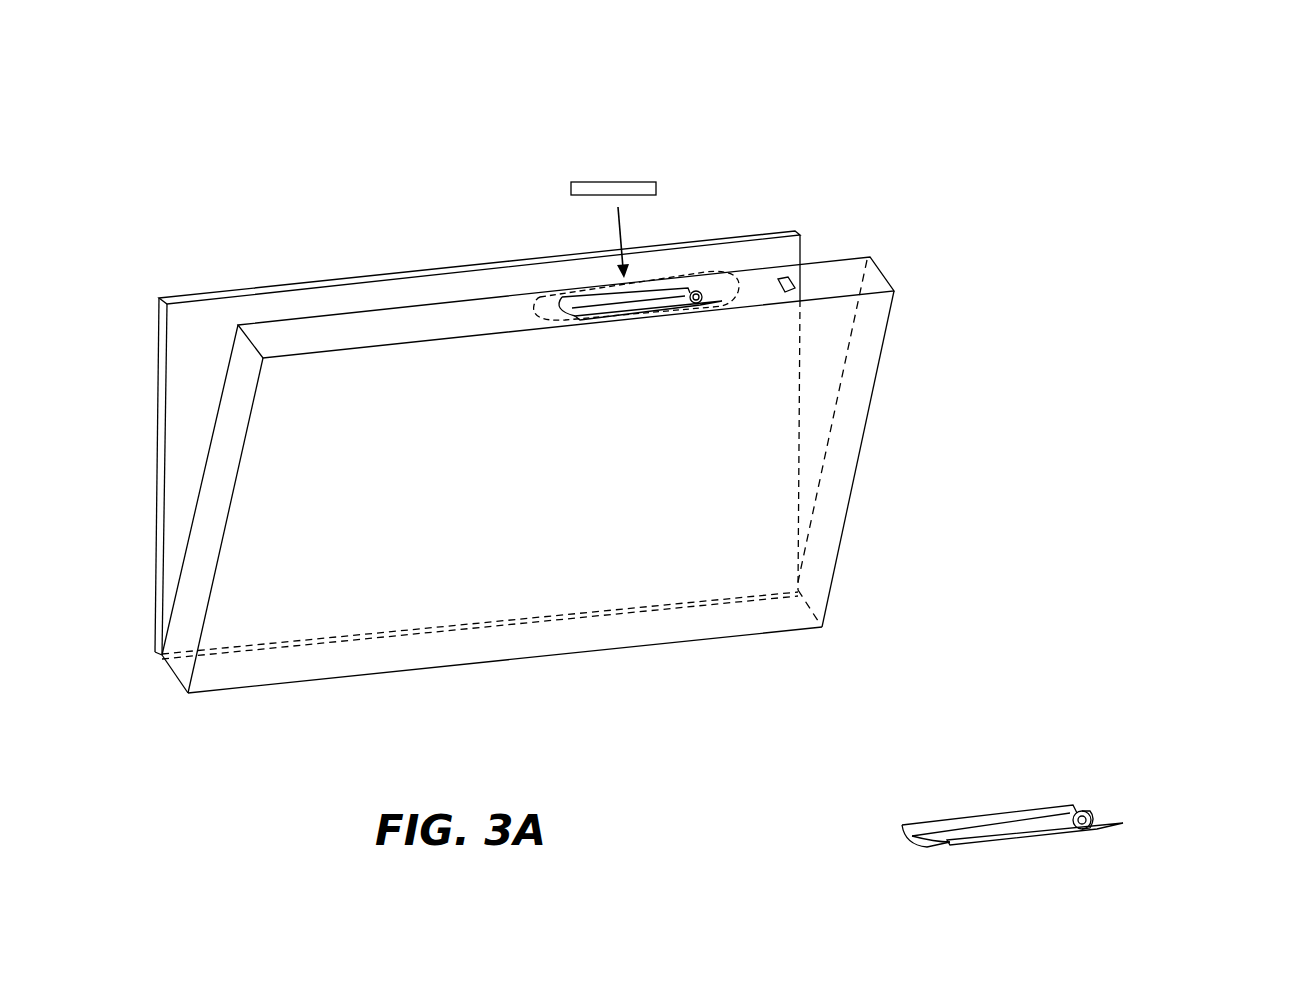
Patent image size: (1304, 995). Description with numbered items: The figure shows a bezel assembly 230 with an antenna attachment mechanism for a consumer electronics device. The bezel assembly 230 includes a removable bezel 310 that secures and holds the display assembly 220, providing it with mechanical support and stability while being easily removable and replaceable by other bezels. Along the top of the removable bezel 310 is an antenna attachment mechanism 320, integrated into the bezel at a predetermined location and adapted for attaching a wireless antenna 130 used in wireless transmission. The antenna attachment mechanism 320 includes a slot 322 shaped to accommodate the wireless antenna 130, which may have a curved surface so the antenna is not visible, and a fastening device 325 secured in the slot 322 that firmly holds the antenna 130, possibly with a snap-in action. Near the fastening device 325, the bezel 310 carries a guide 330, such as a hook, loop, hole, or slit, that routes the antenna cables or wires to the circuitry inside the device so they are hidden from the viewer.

The bezel assembly 230 is at (989, 65).
The display assembly 220 is at (405, 272).
The removable bezel 310 is at (863, 359).
The guide 330 is at (790, 278).
The wireless antenna 130 is at (636, 181).
The antenna attachment mechanism 320 is at (639, 343).
The slot 322 is at (975, 830).
The fastening device 325 is at (1088, 813).